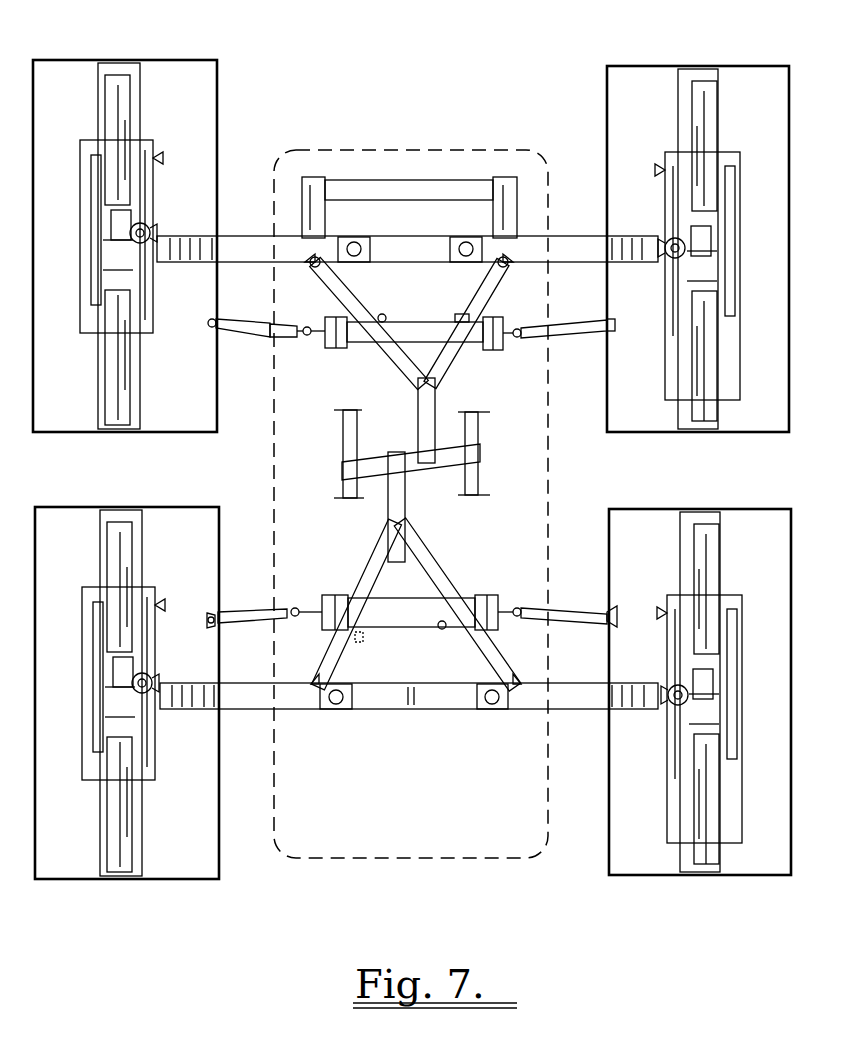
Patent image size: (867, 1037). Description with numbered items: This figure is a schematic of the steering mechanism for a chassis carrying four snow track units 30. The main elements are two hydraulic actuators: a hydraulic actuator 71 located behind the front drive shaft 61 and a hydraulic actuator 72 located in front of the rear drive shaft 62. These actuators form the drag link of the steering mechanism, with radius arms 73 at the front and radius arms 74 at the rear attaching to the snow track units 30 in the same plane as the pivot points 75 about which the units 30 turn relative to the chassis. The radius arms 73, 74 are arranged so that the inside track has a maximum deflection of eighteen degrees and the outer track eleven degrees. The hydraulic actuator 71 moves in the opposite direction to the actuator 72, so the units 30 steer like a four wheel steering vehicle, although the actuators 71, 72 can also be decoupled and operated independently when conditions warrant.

The snow track unit 30 is at (158, 60).
The front drive shaft 61 is at (560, 238).
The rear drive shaft 62 is at (535, 712).
The hydraulic actuator 71 is at (410, 332).
The hydraulic actuator 72 is at (395, 608).
The radius arm 73 is at (265, 328).
The radius arm 74 is at (248, 618).
The pivot point 75 is at (670, 241).